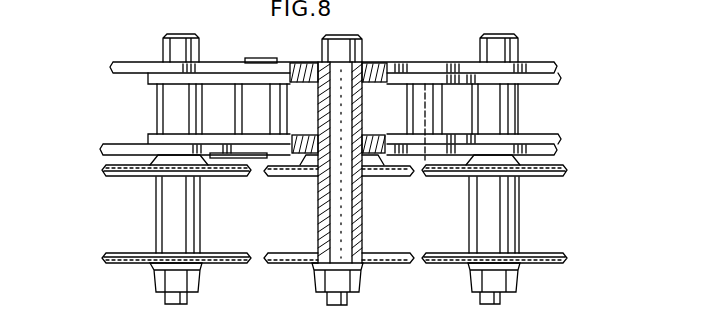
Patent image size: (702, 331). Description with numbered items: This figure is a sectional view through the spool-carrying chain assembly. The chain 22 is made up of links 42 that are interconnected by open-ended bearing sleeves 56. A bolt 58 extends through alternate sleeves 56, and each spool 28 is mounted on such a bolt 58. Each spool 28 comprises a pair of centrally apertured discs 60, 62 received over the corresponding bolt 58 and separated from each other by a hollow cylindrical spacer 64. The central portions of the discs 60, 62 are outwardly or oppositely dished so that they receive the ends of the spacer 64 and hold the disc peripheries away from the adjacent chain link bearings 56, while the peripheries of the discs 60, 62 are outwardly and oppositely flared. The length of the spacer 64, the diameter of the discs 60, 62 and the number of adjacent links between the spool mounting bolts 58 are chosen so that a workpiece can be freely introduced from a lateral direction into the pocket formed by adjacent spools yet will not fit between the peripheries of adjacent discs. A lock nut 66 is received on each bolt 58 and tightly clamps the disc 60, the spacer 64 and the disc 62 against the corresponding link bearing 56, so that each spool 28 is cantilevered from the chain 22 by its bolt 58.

The chain 22 is at (137, 60).
The spool 28 is at (314, 265).
The link 42 is at (231, 78).
The bearing sleeve 56 is at (262, 65).
The bolt 58 is at (184, 35).
The disc 60 is at (115, 264).
The disc 62 is at (137, 175).
The spacer 64 is at (200, 226).
The lock nut 66 is at (160, 278).